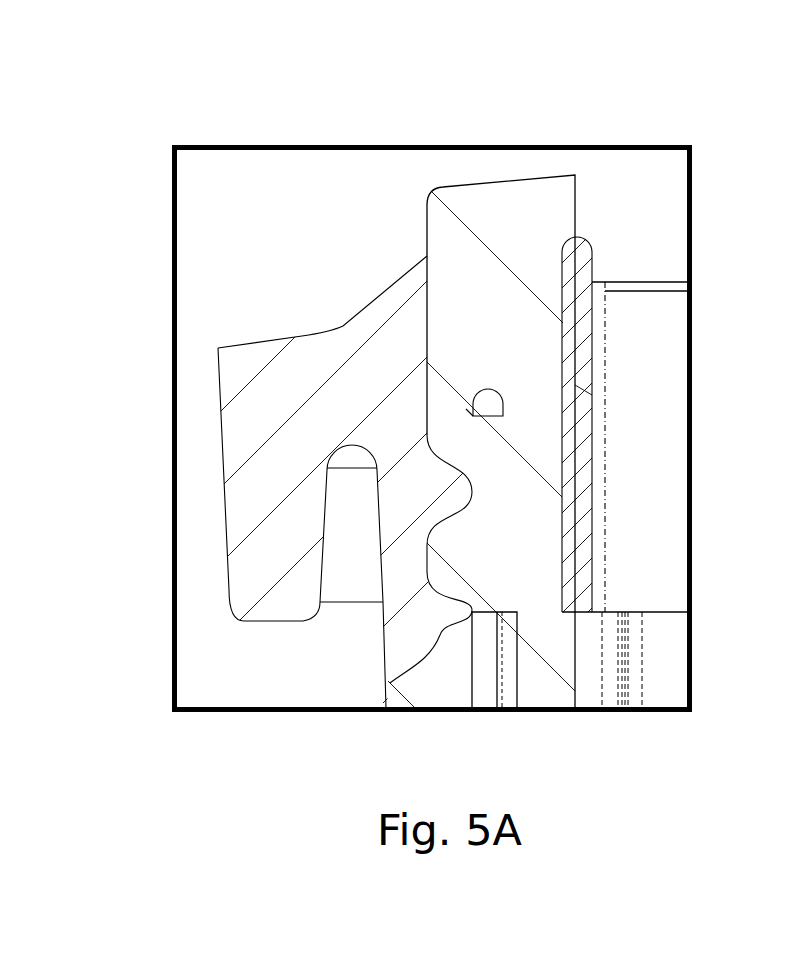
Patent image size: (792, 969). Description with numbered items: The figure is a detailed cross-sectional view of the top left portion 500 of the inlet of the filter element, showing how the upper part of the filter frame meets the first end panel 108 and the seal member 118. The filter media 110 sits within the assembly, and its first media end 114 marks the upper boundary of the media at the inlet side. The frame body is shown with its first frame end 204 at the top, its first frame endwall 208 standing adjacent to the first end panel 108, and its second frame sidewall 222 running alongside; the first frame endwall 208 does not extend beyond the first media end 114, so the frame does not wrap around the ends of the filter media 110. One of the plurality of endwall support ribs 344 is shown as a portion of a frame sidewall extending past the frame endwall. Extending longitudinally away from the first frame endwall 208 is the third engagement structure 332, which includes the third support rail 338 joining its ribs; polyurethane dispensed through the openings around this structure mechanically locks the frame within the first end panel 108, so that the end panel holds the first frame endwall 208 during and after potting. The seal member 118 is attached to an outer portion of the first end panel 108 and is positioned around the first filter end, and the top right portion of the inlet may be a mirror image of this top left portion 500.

The top left portion 500 is at (161, 88).
The seal member 118 is at (238, 421).
The first end panel 108 is at (535, 205).
The third support rail 338 is at (485, 404).
The third engagement structure 332 is at (455, 408).
The plurality of endwall support ribs 344 is at (570, 488).
The first frame end 204 is at (665, 282).
The second frame sidewall 222 is at (665, 338).
The first frame endwall 208 is at (580, 390).
The first media end 114 is at (678, 622).
The filter media 110 is at (503, 703).